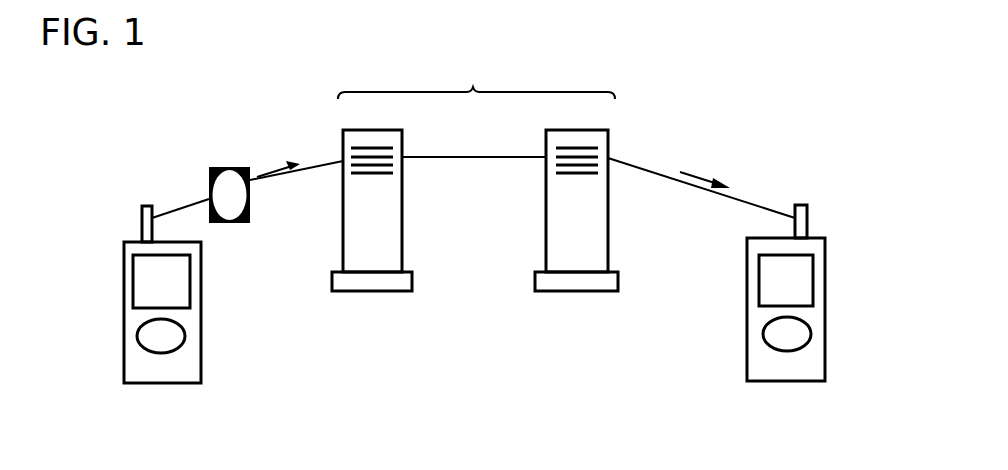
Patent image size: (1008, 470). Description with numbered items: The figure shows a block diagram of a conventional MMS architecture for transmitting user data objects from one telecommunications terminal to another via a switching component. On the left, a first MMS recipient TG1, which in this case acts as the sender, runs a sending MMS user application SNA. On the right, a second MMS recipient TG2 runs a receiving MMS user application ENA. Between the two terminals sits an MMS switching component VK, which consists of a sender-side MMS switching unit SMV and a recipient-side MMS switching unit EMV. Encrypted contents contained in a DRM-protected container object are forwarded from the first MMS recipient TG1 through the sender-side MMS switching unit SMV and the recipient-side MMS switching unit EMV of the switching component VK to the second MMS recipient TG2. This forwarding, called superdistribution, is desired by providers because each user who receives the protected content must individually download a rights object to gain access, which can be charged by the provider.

The first MMS recipient TG1 is at (124, 280).
The second MMS recipient TG2 is at (825, 280).
The sending MMS user application SNA is at (161, 353).
The receiving MMS user application ENA is at (787, 351).
The MMS switching component VK is at (476, 72).
The sender-side MMS switching unit SMV is at (370, 291).
The recipient-side MMS switching unit EMV is at (575, 291).